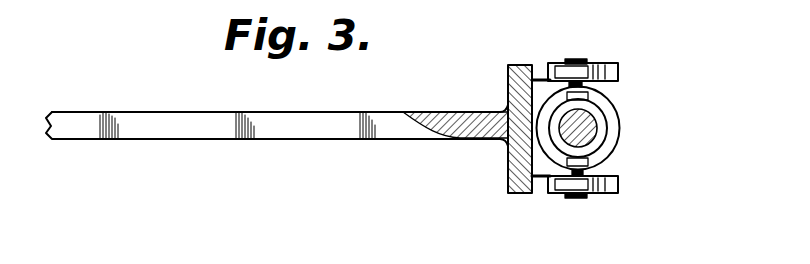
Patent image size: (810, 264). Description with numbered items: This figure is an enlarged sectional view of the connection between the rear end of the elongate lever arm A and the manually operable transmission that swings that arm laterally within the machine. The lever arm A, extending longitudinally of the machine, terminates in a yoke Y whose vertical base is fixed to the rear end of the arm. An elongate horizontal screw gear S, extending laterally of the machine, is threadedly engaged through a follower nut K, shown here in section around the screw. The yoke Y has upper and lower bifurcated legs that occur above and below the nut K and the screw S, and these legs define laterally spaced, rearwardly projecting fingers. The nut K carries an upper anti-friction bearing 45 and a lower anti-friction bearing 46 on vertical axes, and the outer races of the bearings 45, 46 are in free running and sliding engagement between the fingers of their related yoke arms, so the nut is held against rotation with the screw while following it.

The lever arm A is at (183, 112).
The yoke Y is at (525, 65).
The follower nut K is at (619, 103).
The screw gear S is at (597, 126).
The upper anti-friction bearing 45 is at (591, 62).
The lower anti-friction bearing 46 is at (557, 195).